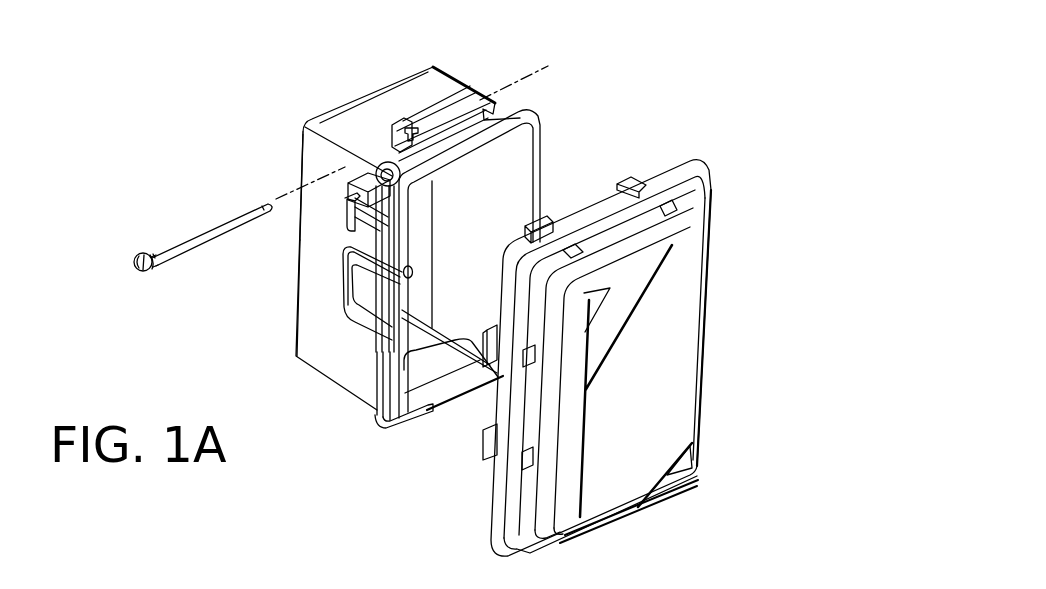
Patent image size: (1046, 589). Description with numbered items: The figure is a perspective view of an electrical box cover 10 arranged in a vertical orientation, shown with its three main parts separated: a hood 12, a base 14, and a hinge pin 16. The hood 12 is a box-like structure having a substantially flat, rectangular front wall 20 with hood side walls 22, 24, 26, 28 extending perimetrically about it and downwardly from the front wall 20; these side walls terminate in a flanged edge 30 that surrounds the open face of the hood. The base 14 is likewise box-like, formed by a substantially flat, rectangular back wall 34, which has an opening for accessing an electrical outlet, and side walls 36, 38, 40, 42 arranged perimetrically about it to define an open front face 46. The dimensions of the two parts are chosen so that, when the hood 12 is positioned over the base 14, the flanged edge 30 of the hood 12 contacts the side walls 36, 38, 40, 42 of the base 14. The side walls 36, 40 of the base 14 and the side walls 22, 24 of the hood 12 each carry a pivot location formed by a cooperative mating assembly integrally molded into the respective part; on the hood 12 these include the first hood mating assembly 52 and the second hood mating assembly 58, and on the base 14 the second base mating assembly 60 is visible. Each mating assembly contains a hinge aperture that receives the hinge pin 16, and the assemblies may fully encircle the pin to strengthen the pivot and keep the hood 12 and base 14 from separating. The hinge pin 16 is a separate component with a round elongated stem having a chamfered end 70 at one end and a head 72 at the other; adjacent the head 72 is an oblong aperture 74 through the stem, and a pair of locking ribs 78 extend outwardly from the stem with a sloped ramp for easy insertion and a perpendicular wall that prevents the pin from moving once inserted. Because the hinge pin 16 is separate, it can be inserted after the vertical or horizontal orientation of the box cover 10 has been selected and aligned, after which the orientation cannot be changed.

The electrical box cover 10 is at (356, 420).
The hood 12 is at (602, 334).
The base 14 is at (413, 245).
The hinge pin 16 is at (176, 231).
The front wall 20 is at (677, 303).
The hood side wall 22 is at (547, 470).
The hood side wall 24 is at (720, 372).
The hood side wall 26 is at (633, 240).
The hood side wall 28 is at (647, 502).
The flanged edge 30 is at (503, 490).
The back wall 34 is at (330, 110).
The base side wall 36 is at (520, 157).
The base side wall 38 is at (313, 290).
The base side wall 40 is at (395, 102).
The base side wall 42 is at (415, 423).
The open front face 46 is at (507, 200).
The first hood mating assembly 52 is at (500, 335).
The second hood mating assembly 58 is at (643, 173).
The second base mating assembly 60 is at (457, 105).
The chamfered end 70 is at (267, 202).
The head 72 is at (130, 263).
The oblong aperture 74 is at (162, 267).
The locking ribs 78 is at (153, 257).